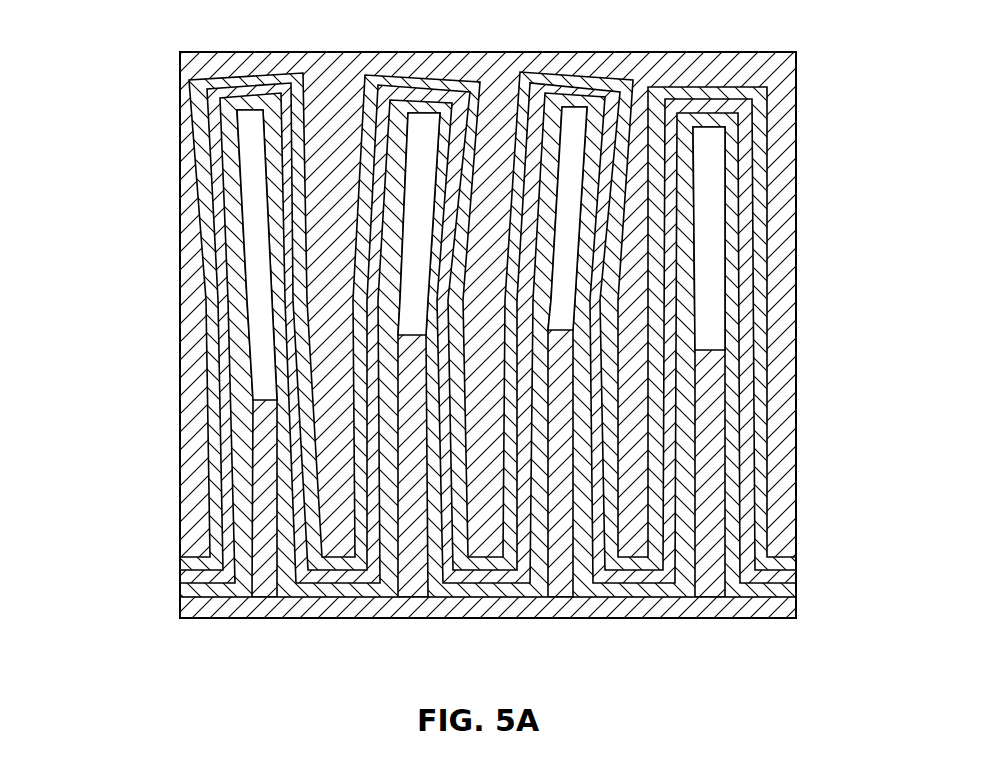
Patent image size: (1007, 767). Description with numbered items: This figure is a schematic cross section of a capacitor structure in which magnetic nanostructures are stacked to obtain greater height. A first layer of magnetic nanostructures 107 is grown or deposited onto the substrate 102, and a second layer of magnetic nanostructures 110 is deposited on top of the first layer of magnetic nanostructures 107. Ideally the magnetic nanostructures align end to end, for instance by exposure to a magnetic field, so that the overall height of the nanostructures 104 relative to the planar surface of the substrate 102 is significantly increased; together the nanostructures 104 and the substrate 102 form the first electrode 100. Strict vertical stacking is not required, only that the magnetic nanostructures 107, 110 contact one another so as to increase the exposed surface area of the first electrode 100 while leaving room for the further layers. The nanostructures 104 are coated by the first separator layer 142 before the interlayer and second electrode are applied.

The first electrode 100 is at (772, 632).
The substrate 102 is at (266, 605).
The nanostructures 104 is at (112, 105).
The first layer of magnetic nanostructures 107 is at (567, 495).
The second layer of magnetic nanostructures 110 is at (712, 137).
The first separator layer 142 is at (240, 262).